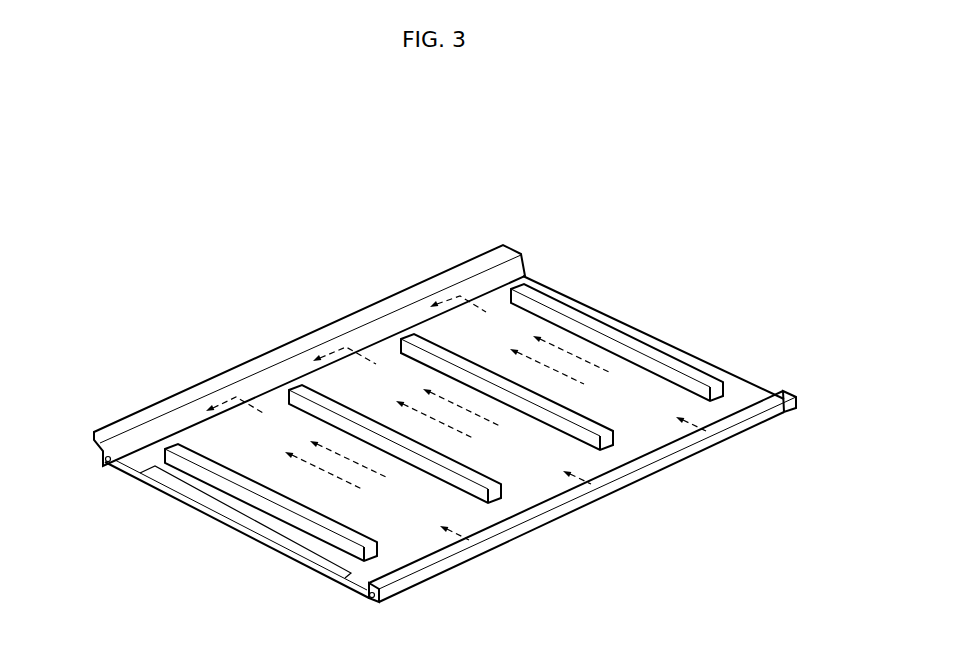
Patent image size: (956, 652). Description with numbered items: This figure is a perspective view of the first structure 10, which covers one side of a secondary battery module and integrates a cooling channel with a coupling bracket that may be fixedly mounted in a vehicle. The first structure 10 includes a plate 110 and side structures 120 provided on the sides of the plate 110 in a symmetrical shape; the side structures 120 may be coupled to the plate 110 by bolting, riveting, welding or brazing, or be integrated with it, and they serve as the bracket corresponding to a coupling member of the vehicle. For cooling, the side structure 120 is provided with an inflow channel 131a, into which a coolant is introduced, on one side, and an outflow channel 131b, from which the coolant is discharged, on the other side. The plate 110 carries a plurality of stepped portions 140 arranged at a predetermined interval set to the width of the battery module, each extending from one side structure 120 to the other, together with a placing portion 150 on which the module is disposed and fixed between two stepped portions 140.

The first structure 10 is at (591, 116).
The plate 110 is at (731, 380).
The side structure 120 is at (522, 262).
The inflow channel 131a is at (367, 602).
The outflow channel 131b is at (103, 463).
The stepped portion 140 is at (340, 547).
The placing portion 150 is at (177, 487).